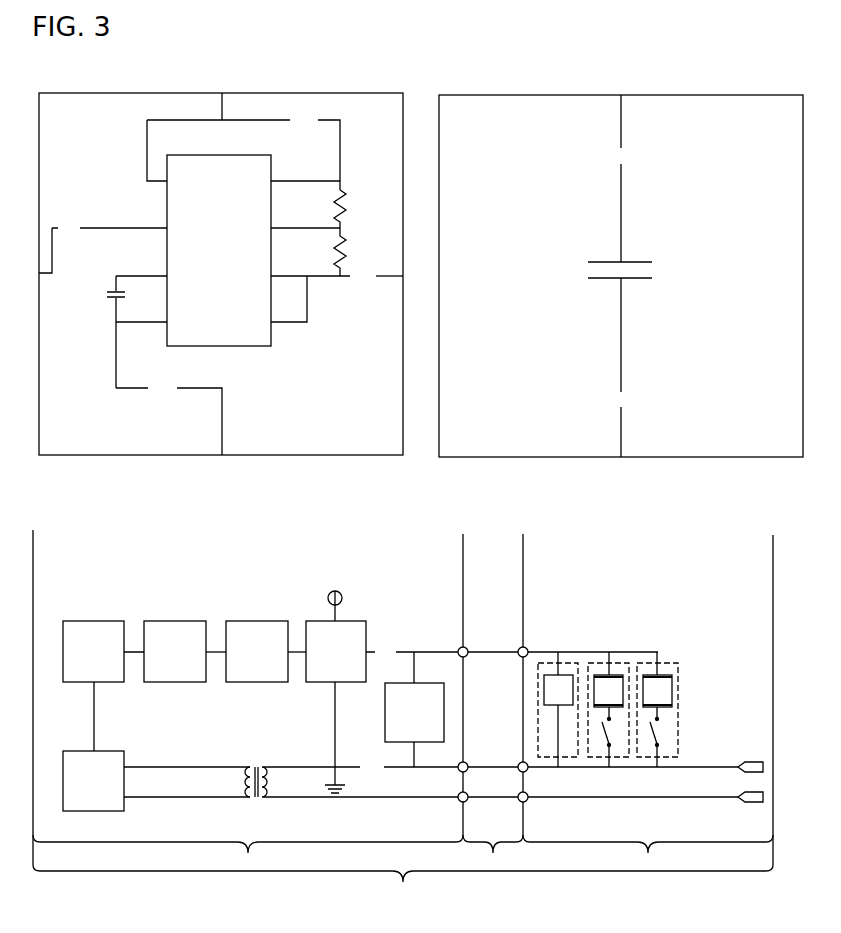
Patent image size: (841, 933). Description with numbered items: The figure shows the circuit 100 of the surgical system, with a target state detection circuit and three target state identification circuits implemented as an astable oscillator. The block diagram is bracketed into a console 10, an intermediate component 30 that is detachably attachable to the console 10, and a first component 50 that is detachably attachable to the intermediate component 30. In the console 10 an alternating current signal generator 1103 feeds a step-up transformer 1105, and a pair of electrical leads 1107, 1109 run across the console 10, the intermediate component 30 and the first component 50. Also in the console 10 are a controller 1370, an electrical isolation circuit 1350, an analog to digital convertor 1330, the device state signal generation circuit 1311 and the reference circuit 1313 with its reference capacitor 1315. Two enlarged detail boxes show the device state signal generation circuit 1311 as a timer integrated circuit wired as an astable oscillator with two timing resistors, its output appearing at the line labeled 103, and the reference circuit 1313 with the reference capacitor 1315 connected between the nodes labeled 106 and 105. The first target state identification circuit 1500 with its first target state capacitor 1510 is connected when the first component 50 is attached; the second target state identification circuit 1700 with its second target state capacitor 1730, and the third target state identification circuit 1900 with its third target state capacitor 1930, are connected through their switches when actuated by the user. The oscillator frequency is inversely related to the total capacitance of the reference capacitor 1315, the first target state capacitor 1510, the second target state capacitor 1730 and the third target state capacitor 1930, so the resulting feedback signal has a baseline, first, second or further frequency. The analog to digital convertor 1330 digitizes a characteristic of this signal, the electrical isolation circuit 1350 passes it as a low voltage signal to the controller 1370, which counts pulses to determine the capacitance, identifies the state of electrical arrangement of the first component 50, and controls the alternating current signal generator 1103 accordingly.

The device state signal generation circuit 1311 is at (221, 443).
The reference circuit 1313 is at (594, 431).
The reference capacitor 1315 is at (658, 278).
The output line 103 is at (103, 247).
The ground line 105 is at (427, 577).
The signal line 106 is at (505, 405).
The controller 1370 is at (103, 686).
The electrical isolation circuit 1350 is at (185, 651).
The analog to digital convertor 1330 is at (266, 651).
The alternating current signal generator 1103 is at (156, 781).
The step-up transformer 1105 is at (257, 795).
The first target state identification circuit 1500 is at (578, 663).
The first target state capacitor 1510 is at (558, 709).
The second target state identification circuit 1700 is at (629, 663).
The second target state capacitor 1730 is at (608, 709).
The third target state identification circuit 1900 is at (678, 663).
The third target state capacitor 1930 is at (657, 709).
The electrical lead 1107 is at (753, 776).
The electrical lead 1109 is at (753, 806).
The console 10 is at (248, 853).
The intermediate component 30 is at (493, 853).
The first component 50 is at (648, 853).
The circuit 100 is at (403, 887).